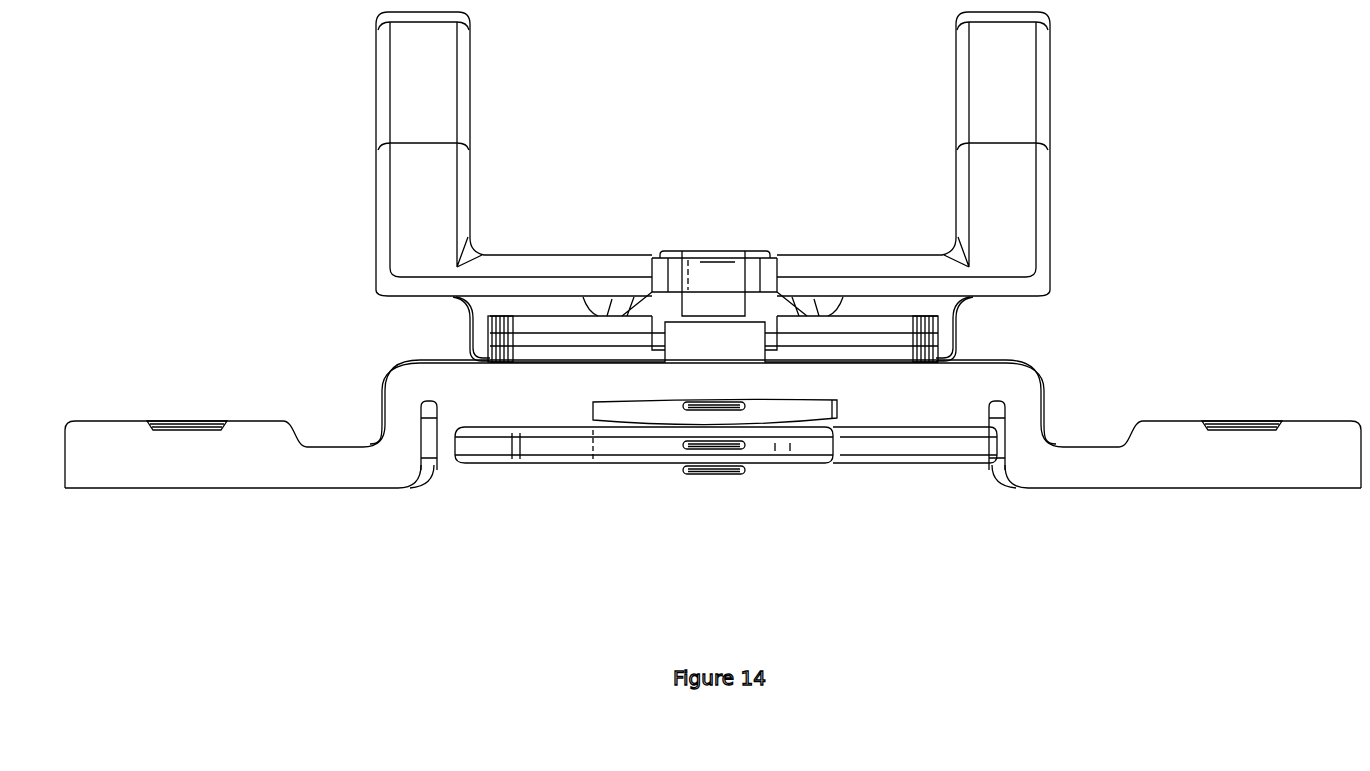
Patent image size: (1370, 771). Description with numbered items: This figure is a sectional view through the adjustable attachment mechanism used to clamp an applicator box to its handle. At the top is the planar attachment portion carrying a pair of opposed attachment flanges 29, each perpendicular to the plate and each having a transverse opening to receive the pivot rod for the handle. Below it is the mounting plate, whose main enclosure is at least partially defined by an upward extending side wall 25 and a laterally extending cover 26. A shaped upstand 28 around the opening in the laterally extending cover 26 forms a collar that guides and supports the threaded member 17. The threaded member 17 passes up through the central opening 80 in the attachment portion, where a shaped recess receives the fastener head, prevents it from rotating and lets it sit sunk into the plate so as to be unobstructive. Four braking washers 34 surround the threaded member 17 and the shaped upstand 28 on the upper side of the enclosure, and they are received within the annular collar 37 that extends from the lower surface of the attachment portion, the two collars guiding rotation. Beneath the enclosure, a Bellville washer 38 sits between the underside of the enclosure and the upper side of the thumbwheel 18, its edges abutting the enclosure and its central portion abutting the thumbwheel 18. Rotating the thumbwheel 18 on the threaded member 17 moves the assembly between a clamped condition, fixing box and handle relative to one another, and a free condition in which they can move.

The threaded member 17 is at (711, 259).
The thumbwheel 18 is at (504, 473).
The upward extending side wall 25 is at (383, 415).
The laterally extending cover 26 is at (966, 394).
The shaped upstand 28 is at (743, 348).
The attachment flange 29 is at (373, 78).
The braking washer 34 is at (530, 358).
The annular collar 37 is at (973, 329).
The Bellville washer 38 is at (630, 432).
The central opening 80 is at (665, 276).